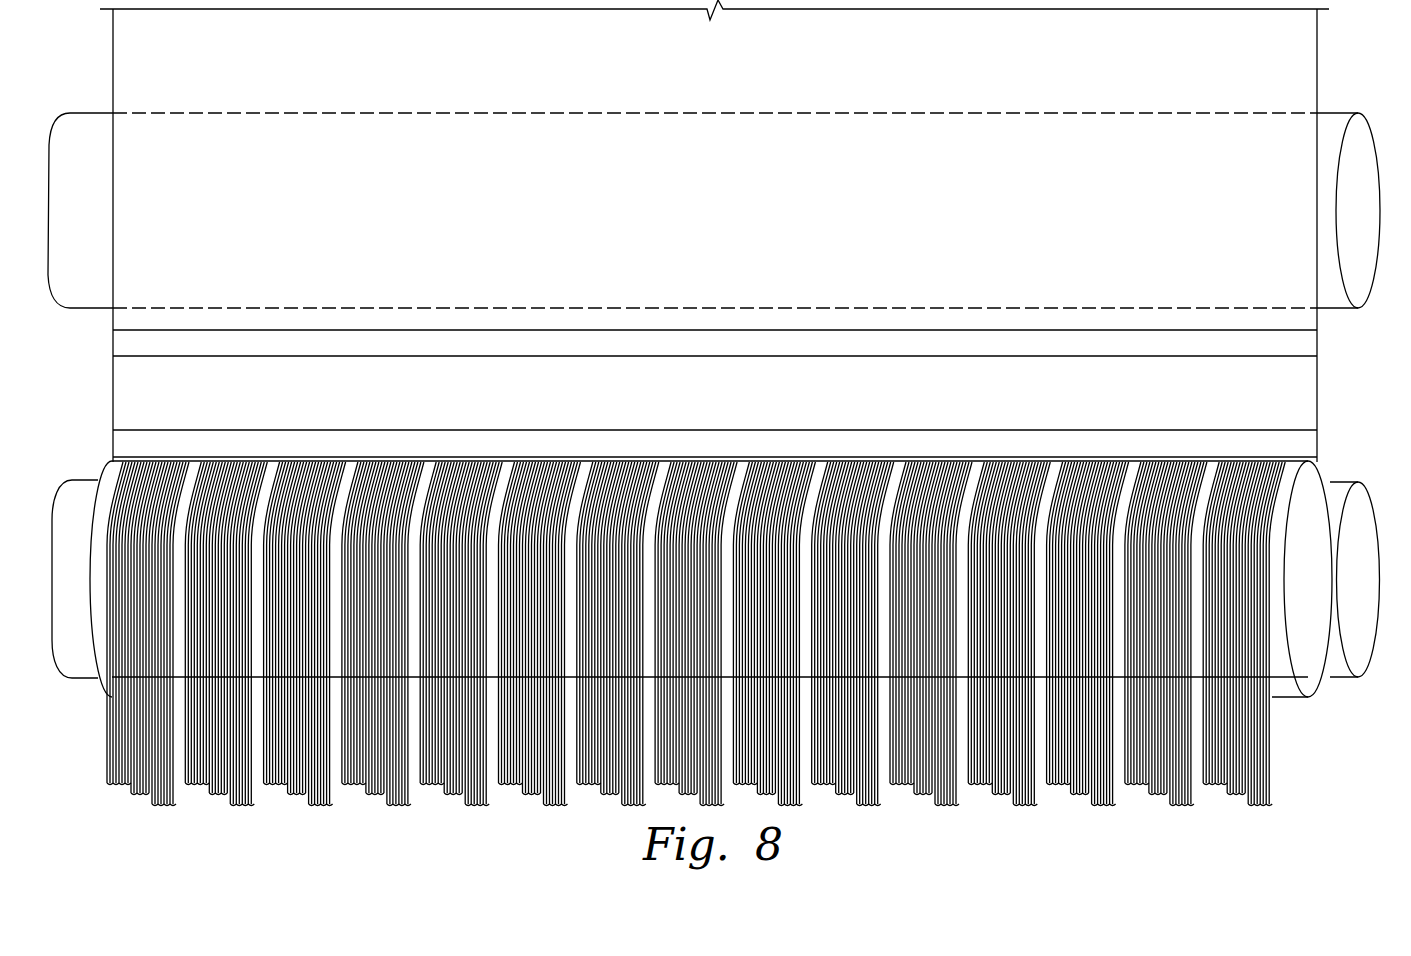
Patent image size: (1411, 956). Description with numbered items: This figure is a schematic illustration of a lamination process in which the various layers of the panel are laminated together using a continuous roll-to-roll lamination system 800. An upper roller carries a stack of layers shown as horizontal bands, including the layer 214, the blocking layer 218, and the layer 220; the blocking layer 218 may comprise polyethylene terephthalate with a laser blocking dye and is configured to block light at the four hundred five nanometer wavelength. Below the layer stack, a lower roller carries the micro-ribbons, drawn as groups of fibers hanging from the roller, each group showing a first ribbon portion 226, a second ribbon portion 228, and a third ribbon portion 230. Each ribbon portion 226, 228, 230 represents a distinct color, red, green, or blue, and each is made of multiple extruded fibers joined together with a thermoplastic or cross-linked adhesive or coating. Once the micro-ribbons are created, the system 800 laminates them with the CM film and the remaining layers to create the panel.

The continuous roll-to-roll lamination system 800 is at (720, 433).
The substrate layer 214 is at (1318, 449).
The blocking layer 218 is at (1318, 395).
The top layer 220 is at (1318, 345).
The first ribbon portion 226 is at (983, 784).
The second ribbon portion 228 is at (1000, 795).
The third ribbon portion 230 is at (1022, 806).